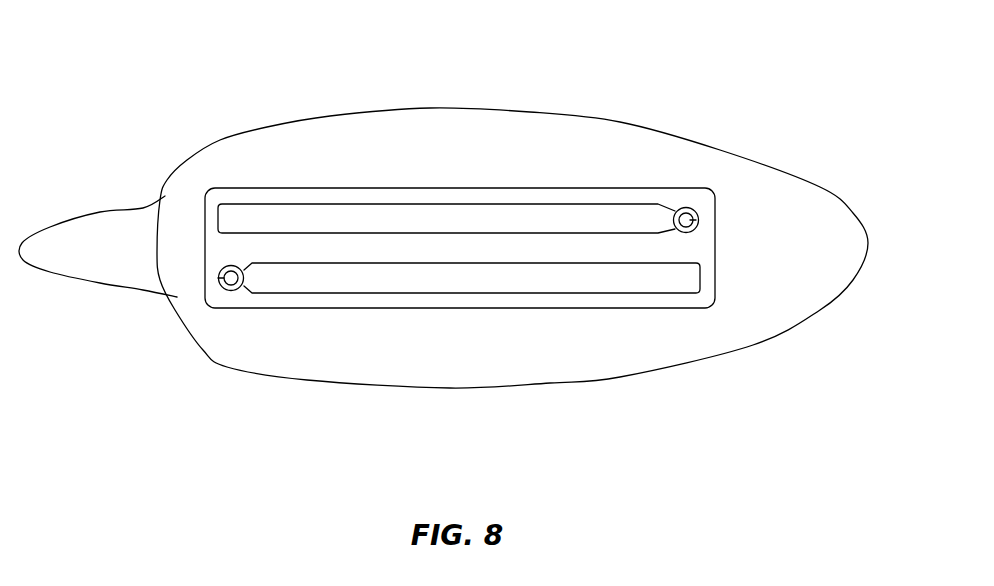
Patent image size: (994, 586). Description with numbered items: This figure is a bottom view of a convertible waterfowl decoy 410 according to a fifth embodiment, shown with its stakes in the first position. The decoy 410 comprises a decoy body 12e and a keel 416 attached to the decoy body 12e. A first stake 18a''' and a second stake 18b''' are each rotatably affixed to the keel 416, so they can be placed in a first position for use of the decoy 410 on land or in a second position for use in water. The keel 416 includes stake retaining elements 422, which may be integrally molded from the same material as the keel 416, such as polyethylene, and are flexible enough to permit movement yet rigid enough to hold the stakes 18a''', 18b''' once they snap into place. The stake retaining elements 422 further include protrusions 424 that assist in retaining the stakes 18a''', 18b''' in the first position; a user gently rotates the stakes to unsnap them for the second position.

The decoy 410 is at (212, 62).
The decoy body 12e is at (753, 345).
The keel 416 is at (462, 188).
The stake retaining elements 422 is at (661, 196).
The protrusions 424 is at (673, 208).
The first stake 18a''' is at (805, 193).
The second stake 18b''' is at (140, 304).